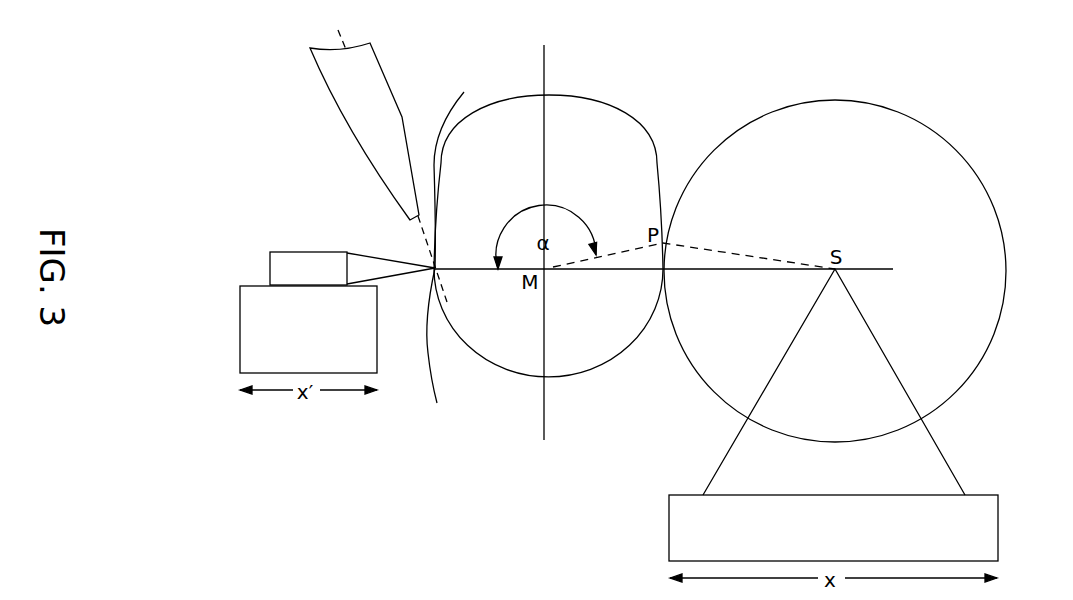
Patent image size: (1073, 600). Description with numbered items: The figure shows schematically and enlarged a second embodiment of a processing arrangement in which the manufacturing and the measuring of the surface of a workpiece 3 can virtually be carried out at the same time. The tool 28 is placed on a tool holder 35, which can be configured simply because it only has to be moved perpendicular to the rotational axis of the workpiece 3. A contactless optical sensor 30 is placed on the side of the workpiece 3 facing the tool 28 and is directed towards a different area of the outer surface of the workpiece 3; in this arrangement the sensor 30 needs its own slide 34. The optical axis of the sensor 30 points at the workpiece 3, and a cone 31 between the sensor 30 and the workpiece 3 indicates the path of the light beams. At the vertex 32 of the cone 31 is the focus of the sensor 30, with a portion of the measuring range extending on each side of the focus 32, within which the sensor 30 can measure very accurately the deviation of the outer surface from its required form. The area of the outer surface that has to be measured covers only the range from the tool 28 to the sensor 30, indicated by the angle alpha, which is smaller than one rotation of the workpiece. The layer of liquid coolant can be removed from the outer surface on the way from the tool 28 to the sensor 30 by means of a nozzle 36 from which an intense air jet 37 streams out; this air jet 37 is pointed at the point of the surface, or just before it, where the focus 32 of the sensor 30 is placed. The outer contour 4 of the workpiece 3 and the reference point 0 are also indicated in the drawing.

The workpiece 3 is at (552, 204).
The outer contour of workpiece 4 is at (640, 130).
The tool 28 is at (973, 165).
The optical sensor 30 is at (268, 265).
The cone 31 is at (370, 252).
The vertex of the cone 32 is at (440, 349).
The slide 34 is at (238, 330).
The tool holder 35 is at (1000, 525).
The nozzle 36 is at (322, 82).
The air jet 37 is at (456, 167).
The origin point 0 is at (417, 268).